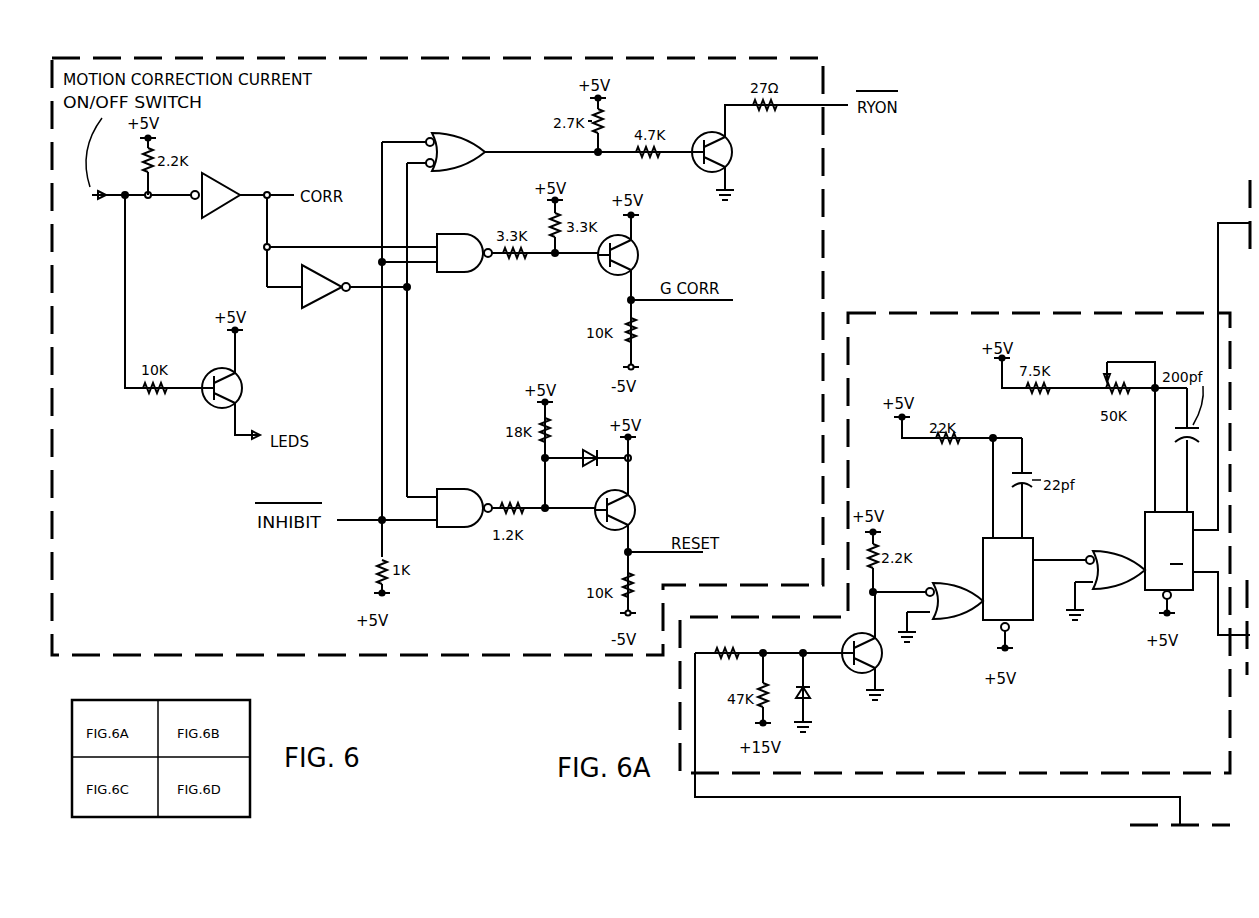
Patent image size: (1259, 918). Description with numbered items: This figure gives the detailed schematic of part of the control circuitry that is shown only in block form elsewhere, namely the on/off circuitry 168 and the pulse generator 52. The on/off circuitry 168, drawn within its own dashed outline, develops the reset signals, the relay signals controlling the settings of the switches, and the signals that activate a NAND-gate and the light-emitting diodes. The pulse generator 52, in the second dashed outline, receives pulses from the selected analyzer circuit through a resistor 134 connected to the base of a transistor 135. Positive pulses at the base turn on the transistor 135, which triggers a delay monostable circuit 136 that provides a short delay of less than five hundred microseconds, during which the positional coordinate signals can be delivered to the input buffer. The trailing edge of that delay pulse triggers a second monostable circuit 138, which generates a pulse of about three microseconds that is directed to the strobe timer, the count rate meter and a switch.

In FIG. 6, the on/off circuitry 168 is at (166, 623).
In FIG. 6A, the pulse generator 52 is at (1163, 749).
In FIG. 6A, the resistor 134 is at (733, 662).
In FIG. 6A, the transistor 135 is at (877, 666).
In FIG. 6A, the delay monostable circuit 136 is at (988, 551).
In FIG. 6A, the second monostable circuit 138 is at (1148, 556).